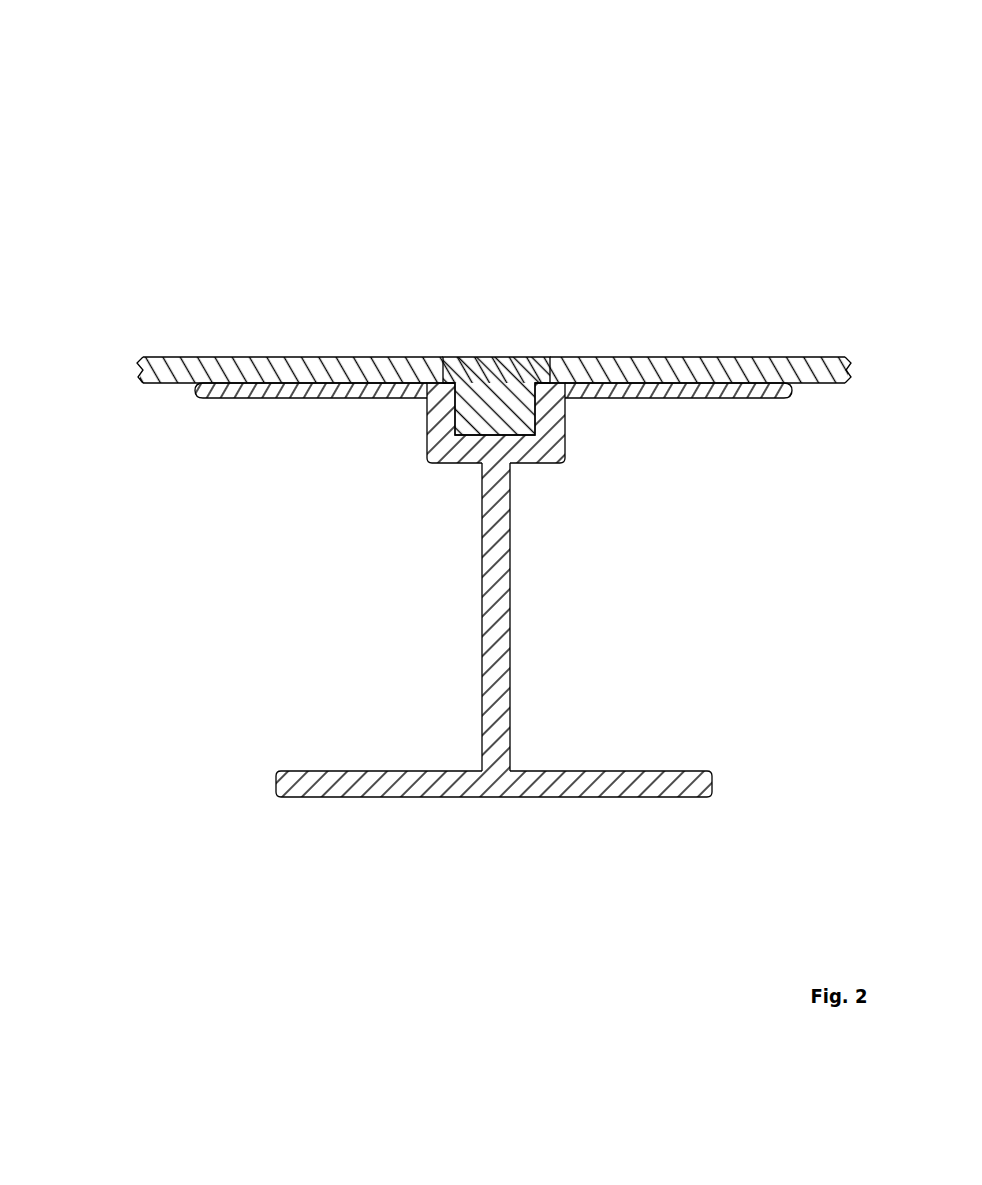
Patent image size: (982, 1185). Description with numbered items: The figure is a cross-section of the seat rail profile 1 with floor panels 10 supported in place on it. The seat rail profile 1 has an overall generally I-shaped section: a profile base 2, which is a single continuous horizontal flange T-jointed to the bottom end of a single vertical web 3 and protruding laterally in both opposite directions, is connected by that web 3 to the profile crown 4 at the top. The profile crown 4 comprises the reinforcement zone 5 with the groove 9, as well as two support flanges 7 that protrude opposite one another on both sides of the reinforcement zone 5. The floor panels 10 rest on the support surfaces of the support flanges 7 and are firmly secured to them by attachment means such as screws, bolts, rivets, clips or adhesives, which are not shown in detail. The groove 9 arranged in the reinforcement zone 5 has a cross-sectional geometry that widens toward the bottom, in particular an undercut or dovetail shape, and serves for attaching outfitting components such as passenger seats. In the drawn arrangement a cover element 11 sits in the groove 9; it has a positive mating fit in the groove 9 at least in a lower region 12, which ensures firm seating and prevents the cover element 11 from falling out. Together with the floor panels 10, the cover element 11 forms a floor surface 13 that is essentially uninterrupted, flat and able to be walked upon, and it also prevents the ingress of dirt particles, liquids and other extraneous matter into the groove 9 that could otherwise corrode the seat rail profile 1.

The seat rail profile 1 is at (528, 138).
The profile base 2 is at (712, 783).
The web 3 is at (508, 665).
The profile crown 4 is at (137, 463).
The reinforcement zone 5 is at (563, 450).
The support flanges 7 is at (280, 398).
The groove 9 is at (485, 381).
The floor panels 10 is at (213, 372).
The cover element 11 is at (527, 357).
The lower region 12 is at (436, 423).
The floor surface 13 is at (682, 260).